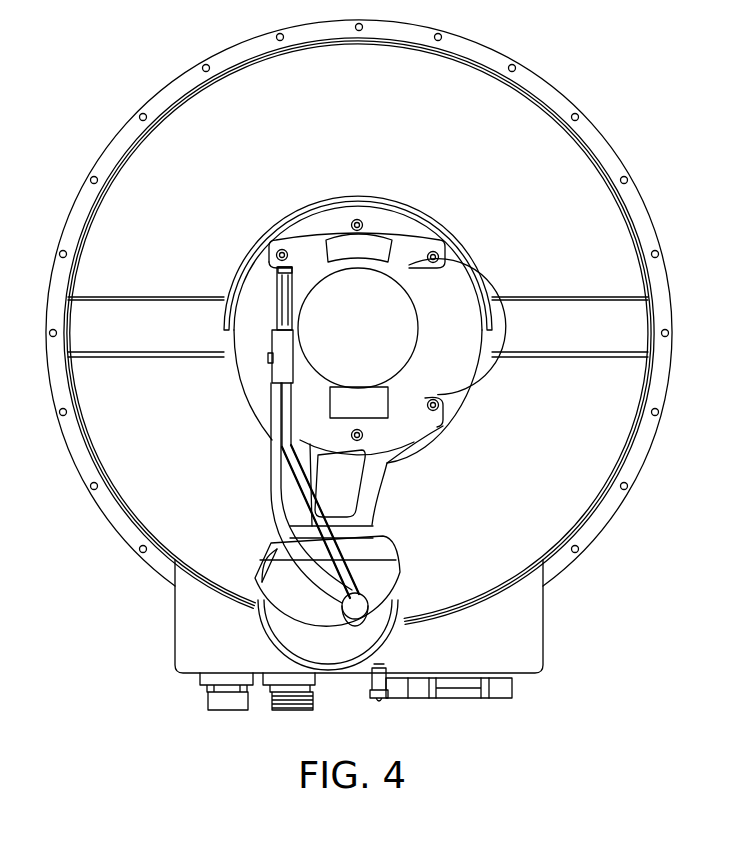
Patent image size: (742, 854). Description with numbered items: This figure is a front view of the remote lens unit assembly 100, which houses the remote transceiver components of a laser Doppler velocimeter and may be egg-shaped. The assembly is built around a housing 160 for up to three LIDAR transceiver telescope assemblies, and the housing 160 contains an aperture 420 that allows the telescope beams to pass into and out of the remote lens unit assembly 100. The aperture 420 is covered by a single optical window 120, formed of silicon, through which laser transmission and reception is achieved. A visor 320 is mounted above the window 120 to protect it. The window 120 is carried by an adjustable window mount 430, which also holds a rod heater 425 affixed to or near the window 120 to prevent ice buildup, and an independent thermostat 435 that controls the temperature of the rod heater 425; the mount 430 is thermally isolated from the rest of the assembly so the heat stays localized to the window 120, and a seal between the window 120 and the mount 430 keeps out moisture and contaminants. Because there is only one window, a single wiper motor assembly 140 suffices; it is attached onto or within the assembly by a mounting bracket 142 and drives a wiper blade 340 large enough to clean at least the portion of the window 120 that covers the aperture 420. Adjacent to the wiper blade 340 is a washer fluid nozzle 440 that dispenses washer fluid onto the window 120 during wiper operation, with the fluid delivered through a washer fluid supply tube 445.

The remote lens unit assembly 100 is at (734, 33).
The housing 160 is at (190, 118).
The visor 320 is at (330, 222).
The aperture 420 is at (312, 302).
The wiper blade 340 is at (278, 270).
The window mount 430 is at (456, 293).
The optical window 120 is at (374, 361).
The thermostat 435 is at (374, 414).
The washer fluid nozzle 440 is at (272, 338).
The rod heater 425 is at (425, 350).
The washer fluid supply tube 445 is at (282, 470).
The mounting bracket 142 is at (382, 460).
The wiper motor assembly 140 is at (395, 587).